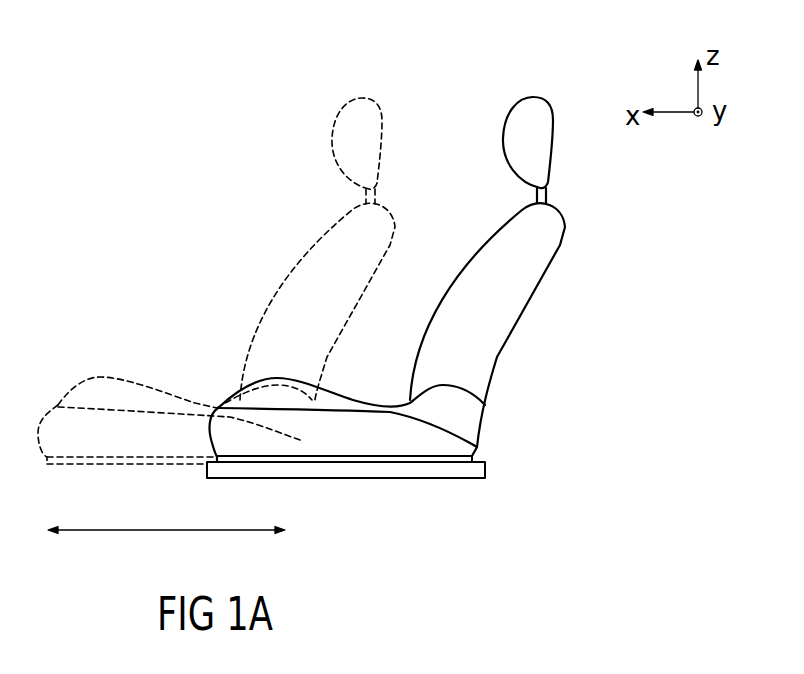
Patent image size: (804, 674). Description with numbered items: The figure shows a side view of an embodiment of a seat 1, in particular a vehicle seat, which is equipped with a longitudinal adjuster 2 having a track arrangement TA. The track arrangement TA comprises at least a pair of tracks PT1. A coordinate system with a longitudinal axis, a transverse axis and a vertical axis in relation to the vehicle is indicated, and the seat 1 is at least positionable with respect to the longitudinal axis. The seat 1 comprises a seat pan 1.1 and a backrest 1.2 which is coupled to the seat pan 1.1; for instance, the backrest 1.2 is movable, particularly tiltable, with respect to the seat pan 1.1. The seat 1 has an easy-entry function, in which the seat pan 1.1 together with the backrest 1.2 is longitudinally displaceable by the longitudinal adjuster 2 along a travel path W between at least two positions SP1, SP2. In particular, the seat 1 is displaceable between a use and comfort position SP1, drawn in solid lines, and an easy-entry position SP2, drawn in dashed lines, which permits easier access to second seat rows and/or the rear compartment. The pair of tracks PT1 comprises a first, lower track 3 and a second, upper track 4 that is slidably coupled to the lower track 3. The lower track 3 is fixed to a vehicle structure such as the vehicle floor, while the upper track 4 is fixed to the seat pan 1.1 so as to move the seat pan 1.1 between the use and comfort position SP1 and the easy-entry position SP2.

The seat 1 is at (438, 96).
The use and comfort position SP1 is at (583, 242).
The easy-entry position SP2 is at (294, 245).
The seat pan 1.1 is at (337, 390).
The backrest 1.2 is at (493, 312).
The longitudinal adjuster 2 is at (488, 458).
The lower track 3 is at (207, 473).
The upper track 4 is at (328, 460).
The track arrangement TA is at (500, 472).
The pair of tracks PT1 is at (305, 514).
The travel path W is at (166, 551).